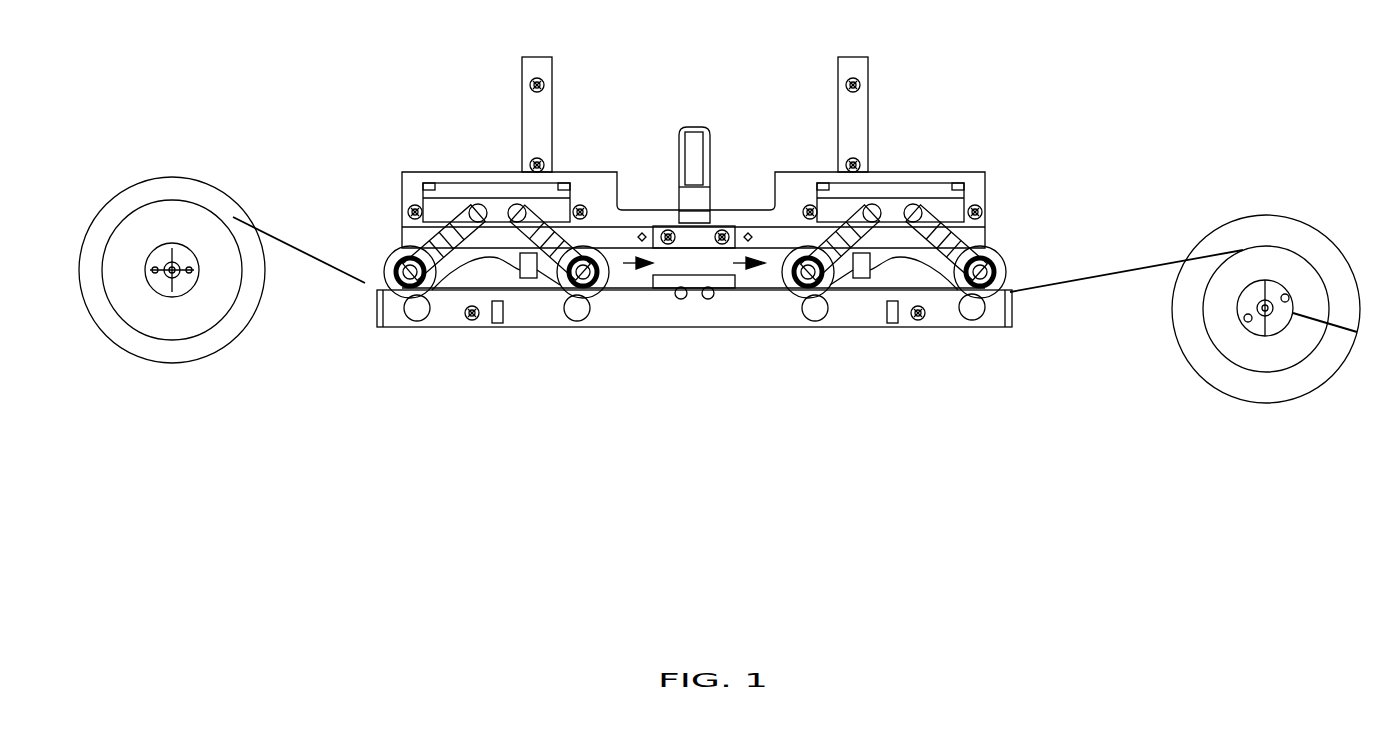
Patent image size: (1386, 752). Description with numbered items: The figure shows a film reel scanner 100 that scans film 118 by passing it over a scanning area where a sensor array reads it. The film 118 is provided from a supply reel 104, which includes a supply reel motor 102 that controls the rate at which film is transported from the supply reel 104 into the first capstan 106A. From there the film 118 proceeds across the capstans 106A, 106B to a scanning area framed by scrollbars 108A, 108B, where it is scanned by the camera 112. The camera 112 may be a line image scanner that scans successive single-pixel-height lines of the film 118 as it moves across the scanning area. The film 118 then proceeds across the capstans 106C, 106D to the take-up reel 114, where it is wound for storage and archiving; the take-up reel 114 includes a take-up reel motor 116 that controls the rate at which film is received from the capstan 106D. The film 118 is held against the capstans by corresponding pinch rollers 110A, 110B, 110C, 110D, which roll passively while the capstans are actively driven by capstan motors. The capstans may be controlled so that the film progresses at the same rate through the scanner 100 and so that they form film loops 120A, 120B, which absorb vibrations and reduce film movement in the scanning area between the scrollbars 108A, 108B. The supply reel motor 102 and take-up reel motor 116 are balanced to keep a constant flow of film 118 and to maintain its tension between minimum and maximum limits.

The film reel scanner 100 is at (170, 576).
The supply reel motor 102 is at (173, 277).
The supply reel 104 is at (138, 202).
The capstan 106A is at (365, 337).
The capstan 106B is at (526, 337).
The capstan 106C is at (779, 345).
The capstan 106D is at (922, 333).
The scrollbar 108A is at (680, 297).
The scrollbar 108B is at (709, 297).
The pinch roller 110A is at (440, 236).
The pinch roller 110B is at (590, 243).
The pinch roller 110C is at (810, 253).
The pinch roller 110D is at (945, 218).
The camera 112 is at (667, 175).
The take-up reel 114 is at (1312, 232).
The take-up reel motor 116 is at (1262, 327).
The film 118 is at (738, 231).
The film loop 120A is at (442, 335).
The film loop 120B is at (840, 342).